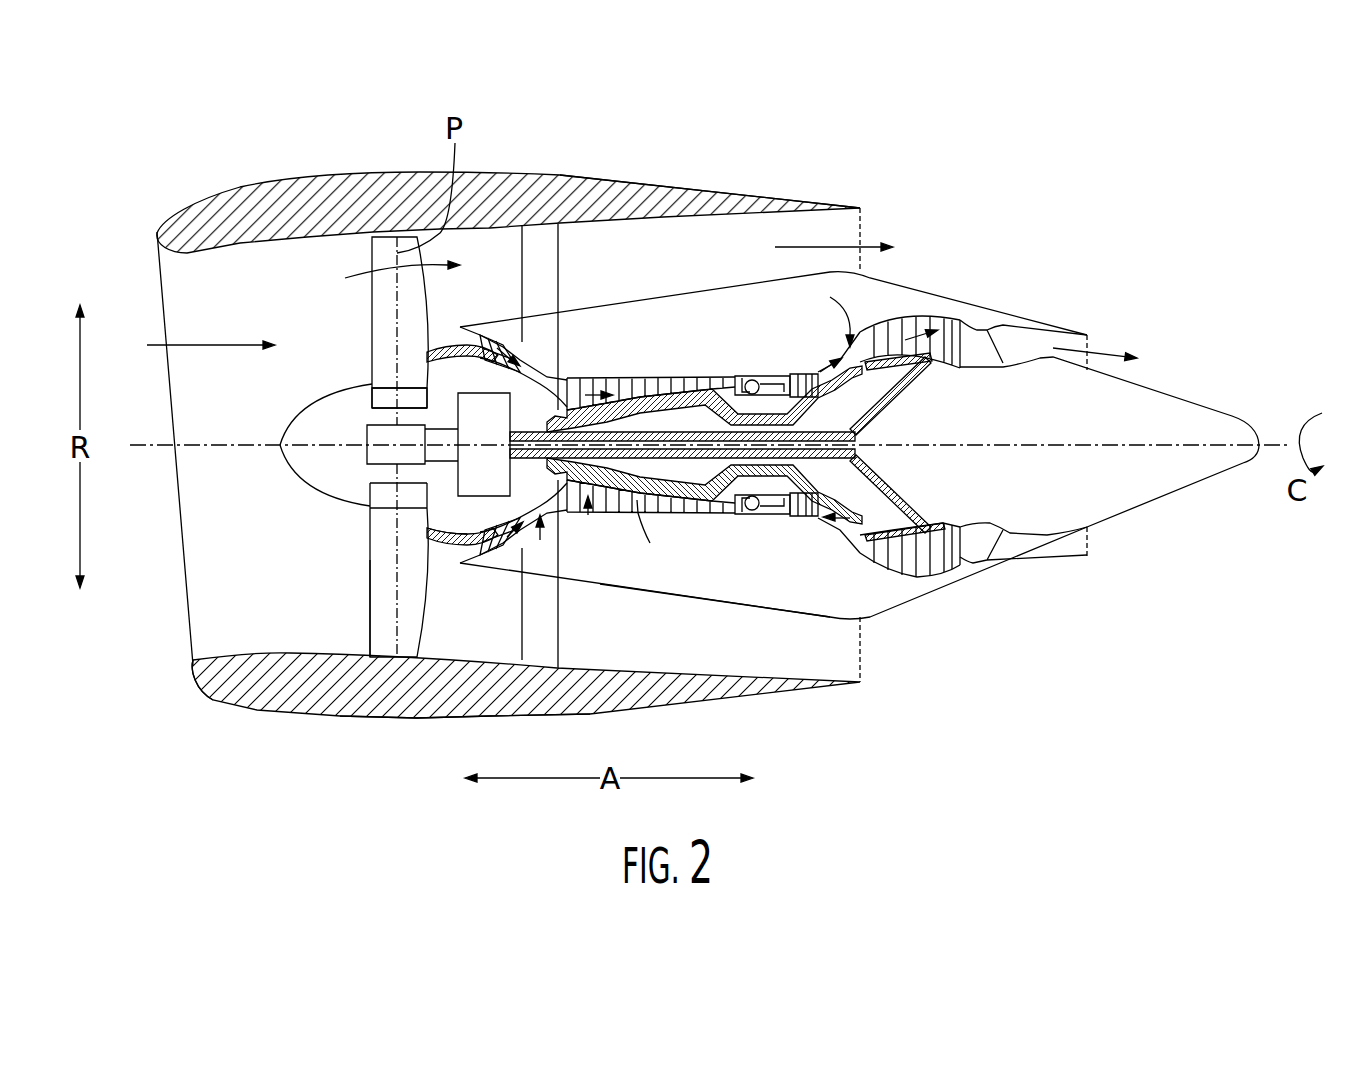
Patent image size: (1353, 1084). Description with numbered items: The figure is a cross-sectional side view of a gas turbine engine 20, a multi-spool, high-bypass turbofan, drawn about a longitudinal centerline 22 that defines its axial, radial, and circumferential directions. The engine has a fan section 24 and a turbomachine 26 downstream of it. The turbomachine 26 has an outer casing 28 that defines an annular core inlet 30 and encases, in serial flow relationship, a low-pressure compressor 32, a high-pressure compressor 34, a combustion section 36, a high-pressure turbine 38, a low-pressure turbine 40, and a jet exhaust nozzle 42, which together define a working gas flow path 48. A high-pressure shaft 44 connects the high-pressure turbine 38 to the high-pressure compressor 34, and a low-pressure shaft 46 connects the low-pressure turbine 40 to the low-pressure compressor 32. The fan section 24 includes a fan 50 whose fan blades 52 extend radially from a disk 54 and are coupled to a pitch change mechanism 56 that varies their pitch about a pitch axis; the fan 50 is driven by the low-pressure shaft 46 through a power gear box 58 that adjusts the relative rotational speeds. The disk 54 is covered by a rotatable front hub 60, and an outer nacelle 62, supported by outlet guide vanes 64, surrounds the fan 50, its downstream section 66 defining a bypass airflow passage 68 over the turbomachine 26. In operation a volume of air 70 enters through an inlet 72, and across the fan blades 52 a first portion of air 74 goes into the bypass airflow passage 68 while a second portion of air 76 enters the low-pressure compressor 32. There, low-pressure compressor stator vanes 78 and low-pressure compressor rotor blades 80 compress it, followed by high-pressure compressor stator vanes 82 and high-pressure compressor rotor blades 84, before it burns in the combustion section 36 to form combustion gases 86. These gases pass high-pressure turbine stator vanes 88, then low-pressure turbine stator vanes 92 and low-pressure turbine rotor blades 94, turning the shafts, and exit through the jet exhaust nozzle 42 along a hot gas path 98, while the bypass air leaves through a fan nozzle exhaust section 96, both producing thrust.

The gas turbine engine 20 is at (1005, 176).
The longitudinal centerline 22 is at (1030, 443).
The fan section 24 is at (327, 250).
The turbomachine 26 is at (669, 326).
The outer casing 28 is at (717, 610).
The annular core inlet 30 is at (467, 553).
The low-pressure compressor 32 is at (527, 522).
The high-pressure compressor 34 is at (587, 500).
The combustion section 36 is at (757, 528).
The high-pressure turbine 38 is at (880, 520).
The low-pressure turbine 40 is at (950, 587).
The jet exhaust nozzle 42 is at (1011, 572).
The high-pressure shaft 44 is at (767, 420).
The low-pressure shaft 46 is at (863, 430).
The working gas flow path 48 is at (542, 540).
The fan 50 is at (350, 527).
The fan blades 52 is at (365, 597).
The disk 54 is at (387, 398).
The pitch change mechanism 56 is at (363, 427).
The power gear box 58 is at (497, 410).
The front hub 60 is at (210, 503).
The outer nacelle 62 is at (417, 720).
The outlet guide vanes 64 is at (560, 255).
The downstream section 66 is at (796, 196).
The bypass airflow passage 68 is at (714, 267).
The volume of air 70 is at (210, 343).
The inlet 72 is at (187, 658).
The first portion of air 74 is at (383, 277).
The second portion of air 76 is at (443, 337).
The low-pressure compressor stator vanes 78 is at (490, 547).
The low-pressure compressor rotor blades 80 is at (490, 543).
The high-pressure compressor stator vanes 82 is at (897, 463).
The high-pressure compressor rotor blades 84 is at (650, 500).
The combustion gases 86 is at (907, 313).
The high-pressure turbine stator vanes 88 is at (778, 510).
The low-pressure turbine stator vanes 92 is at (870, 543).
The low-pressure turbine rotor blades 94 is at (880, 557).
The fan nozzle exhaust section 96 is at (850, 233).
The hot gas path 98 is at (834, 417).